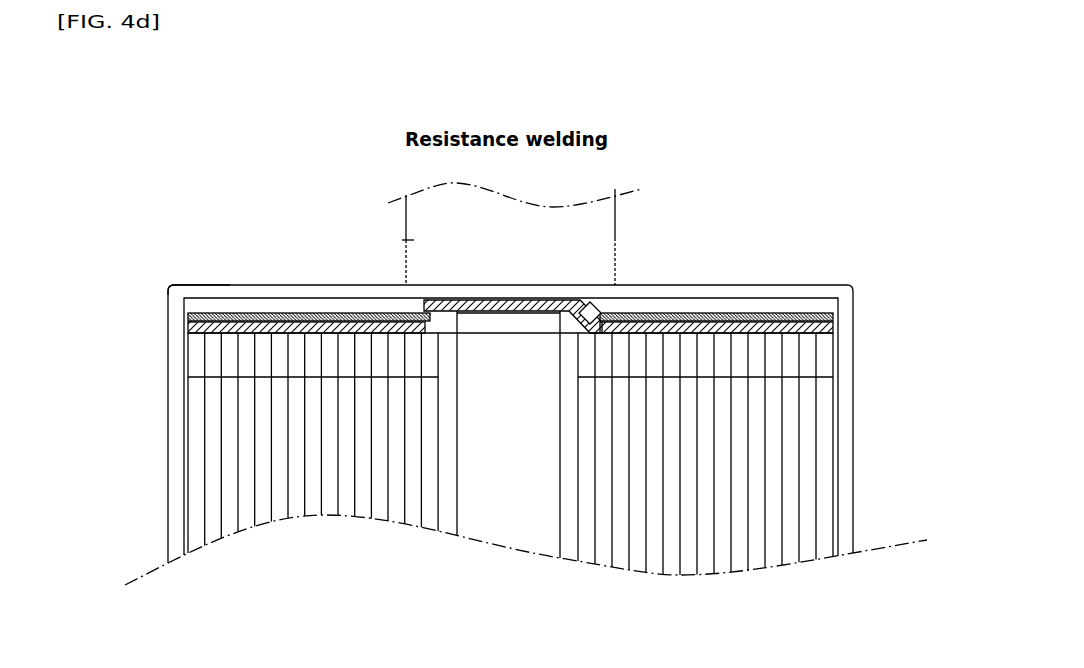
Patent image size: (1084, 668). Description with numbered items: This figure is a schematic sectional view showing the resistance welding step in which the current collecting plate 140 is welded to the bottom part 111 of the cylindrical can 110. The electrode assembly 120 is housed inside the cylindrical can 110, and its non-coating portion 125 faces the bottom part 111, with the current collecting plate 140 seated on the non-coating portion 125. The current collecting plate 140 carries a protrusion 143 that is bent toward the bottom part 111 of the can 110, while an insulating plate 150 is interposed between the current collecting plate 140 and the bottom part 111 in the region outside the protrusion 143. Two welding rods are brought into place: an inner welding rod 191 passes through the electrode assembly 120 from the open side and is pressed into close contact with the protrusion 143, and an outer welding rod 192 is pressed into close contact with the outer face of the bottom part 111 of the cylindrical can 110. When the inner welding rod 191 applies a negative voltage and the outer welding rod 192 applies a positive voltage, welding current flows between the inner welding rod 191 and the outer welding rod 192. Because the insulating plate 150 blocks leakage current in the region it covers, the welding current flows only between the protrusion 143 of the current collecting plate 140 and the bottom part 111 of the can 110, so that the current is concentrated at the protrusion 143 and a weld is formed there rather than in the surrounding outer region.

The cylindrical can 110 is at (165, 443).
The bottom part 111 is at (214, 284).
The electrode assembly 120 is at (837, 477).
The non-coating portion 125 is at (830, 363).
The current collecting plate 140 is at (838, 327).
The protrusion 143 is at (598, 306).
The insulating plate 150 is at (818, 308).
The inner welding rod 191 is at (511, 522).
The outer welding rod 192 is at (408, 241).